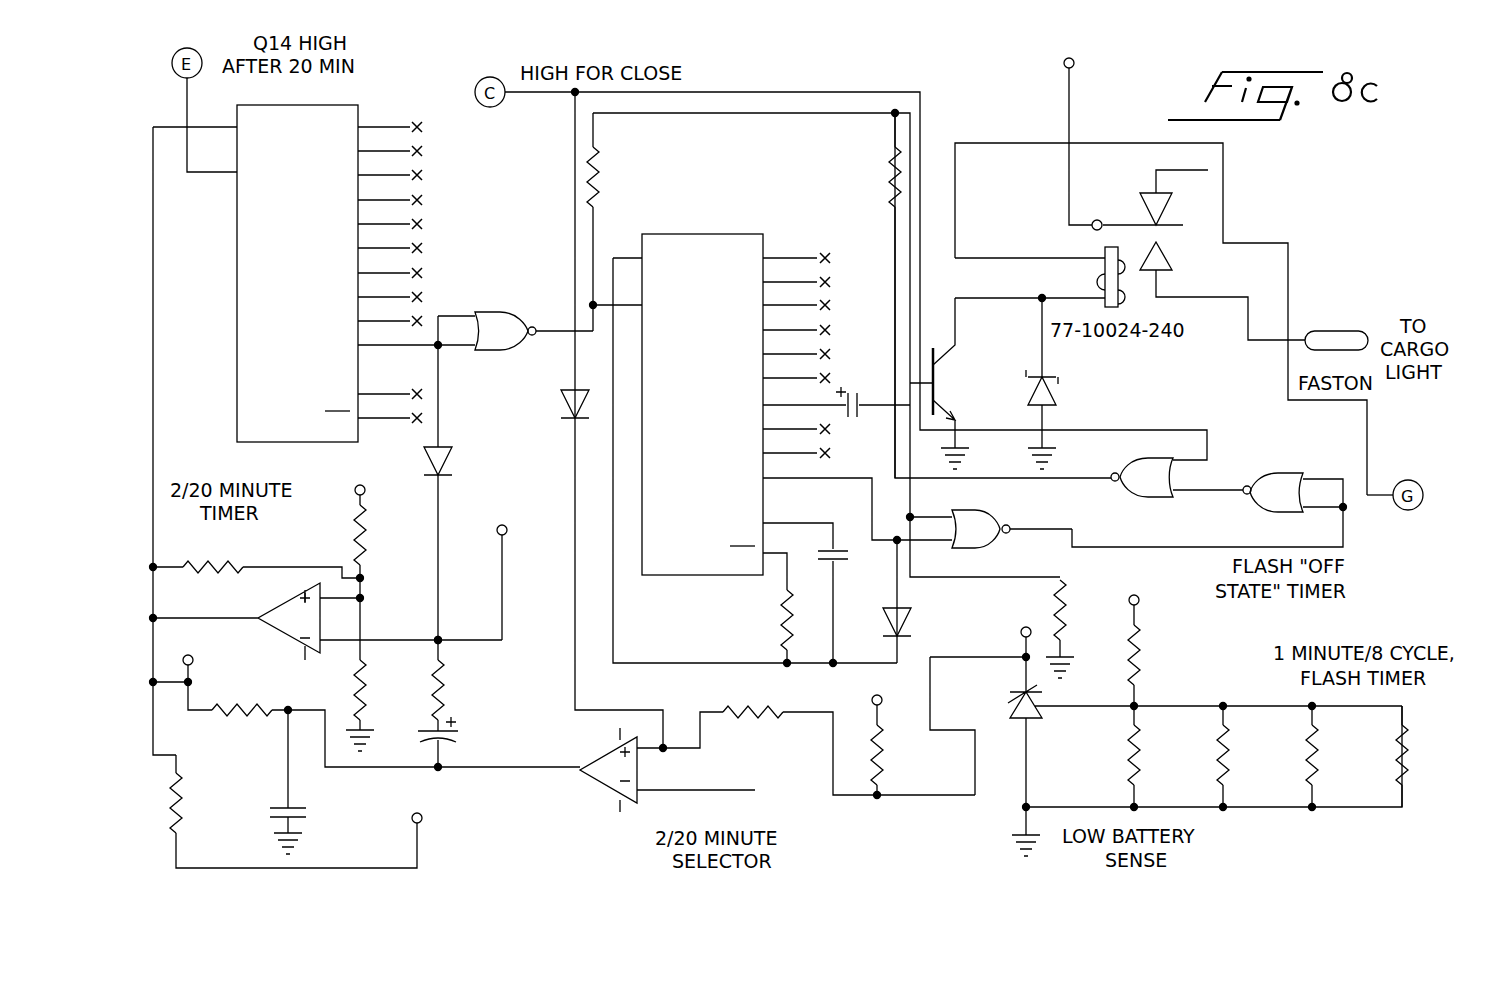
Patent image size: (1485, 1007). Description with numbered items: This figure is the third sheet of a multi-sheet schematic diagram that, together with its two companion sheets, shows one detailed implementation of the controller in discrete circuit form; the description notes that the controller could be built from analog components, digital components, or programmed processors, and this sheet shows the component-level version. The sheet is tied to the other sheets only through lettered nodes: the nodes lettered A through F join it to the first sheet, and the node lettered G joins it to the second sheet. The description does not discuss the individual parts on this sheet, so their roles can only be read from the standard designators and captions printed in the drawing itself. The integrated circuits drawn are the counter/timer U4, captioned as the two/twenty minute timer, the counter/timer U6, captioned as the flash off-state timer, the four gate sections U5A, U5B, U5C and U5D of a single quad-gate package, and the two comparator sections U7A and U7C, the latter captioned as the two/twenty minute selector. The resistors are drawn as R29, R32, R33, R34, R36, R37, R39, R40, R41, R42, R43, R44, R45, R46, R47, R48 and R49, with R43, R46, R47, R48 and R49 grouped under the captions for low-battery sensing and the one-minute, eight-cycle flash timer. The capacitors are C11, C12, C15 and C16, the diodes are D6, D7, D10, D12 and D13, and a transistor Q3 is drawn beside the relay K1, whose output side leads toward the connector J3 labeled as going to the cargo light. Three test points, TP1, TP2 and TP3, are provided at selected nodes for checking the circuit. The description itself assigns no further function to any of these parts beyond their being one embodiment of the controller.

The 4060 counter/timer (2/20 minute timer) U4 is at (341, 276).
The 4060 counter/timer (flash off-state timer) U6 is at (721, 407).
The 14001 NOR gate U5A is at (1160, 483).
The 14001 NOR gate U5B is at (1209, 497).
The 14001 NOR gate U5C is at (515, 330).
The 14001 NOR gate U5D is at (996, 529).
The LM339 comparator U7A is at (326, 618).
The LM339 comparator (2/20 minute selector) U7C is at (649, 783).
The resistor 10K R29 is at (865, 295).
The resistor 10K R32 is at (618, 209).
The resistor 100K R33 is at (382, 561).
The resistor 100K R34 is at (1081, 629).
The resistor 100K R36 is at (257, 565).
The resistor 27K R37 is at (759, 622).
The resistor 100K R39 is at (382, 705).
The resistor 10K R40 is at (464, 695).
The resistor 2.2K R41 is at (895, 735).
The resistor 100K R42 is at (394, 724).
The resistor 78.7K 1% R43 is at (1178, 648).
The resistor 10K R44 is at (303, 811).
The resistor 100K R45 is at (819, 736).
The resistor 9.53K 1% R46 is at (1086, 768).
The resistor 180K R47 is at (1190, 757).
The resistor 360K R48 is at (1281, 757).
The resistor 750K R49 is at (1369, 756).
The capacitor 1/25V C11 is at (862, 403).
The capacitor .1 C12 is at (849, 579).
The capacitor .1 C15 is at (306, 782).
The capacitor 1/25V tantalum C16 is at (488, 742).
The diode 1N914 D6 is at (473, 501).
The zener diode 1N974B D7 is at (1049, 382).
The diode 1N914 D10 is at (933, 619).
The diode 1N914 D12 is at (543, 398).
The TL431 voltage reference D13 is at (1166, 756).
The transistor MPSA06 Q3 is at (975, 383).
The relay 77-10024-240 K1 is at (1161, 263).
The faston connector to cargo light J3 is at (1336, 322).
The test point 1 TP1 is at (476, 573).
The test point 2 TP2 is at (181, 668).
The test point 3 TP3 is at (1017, 645).